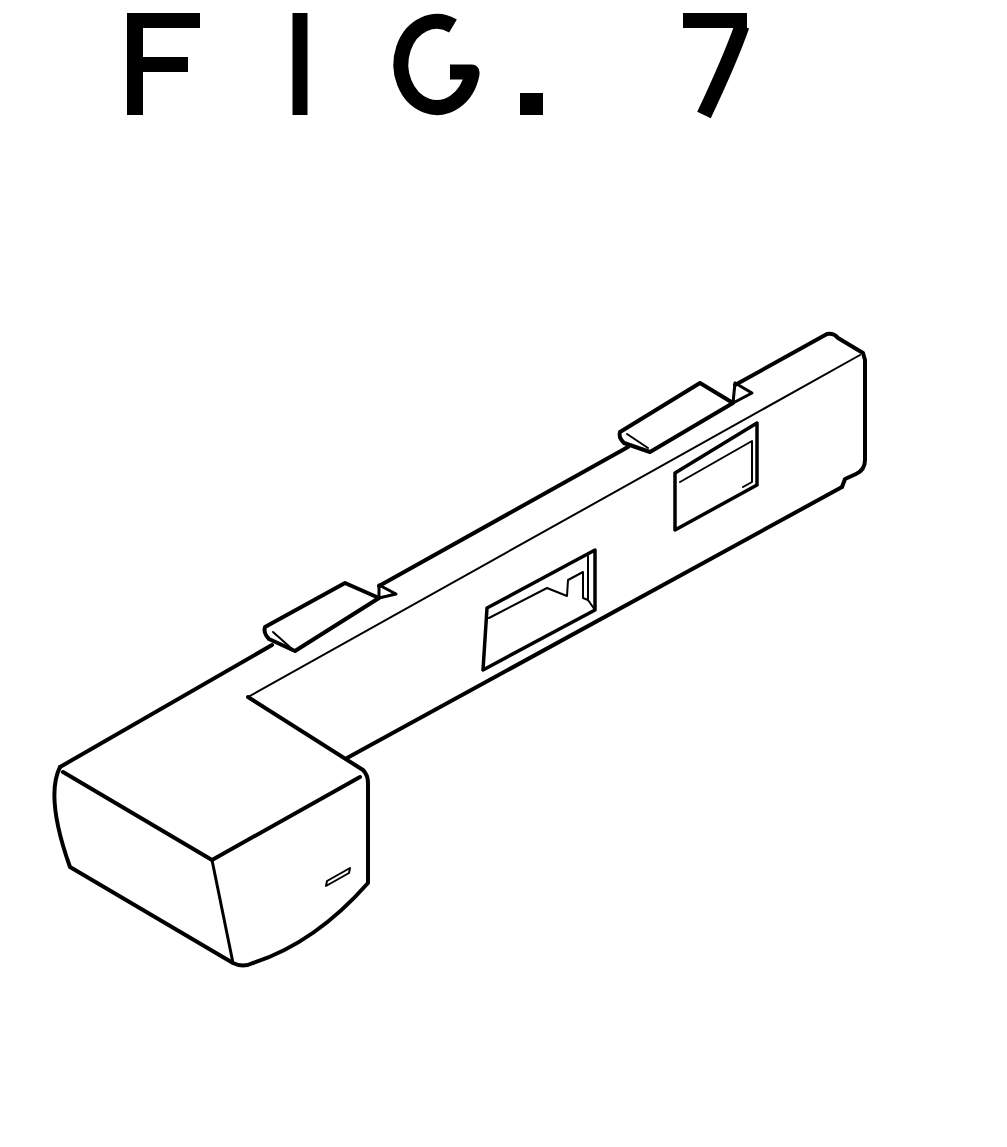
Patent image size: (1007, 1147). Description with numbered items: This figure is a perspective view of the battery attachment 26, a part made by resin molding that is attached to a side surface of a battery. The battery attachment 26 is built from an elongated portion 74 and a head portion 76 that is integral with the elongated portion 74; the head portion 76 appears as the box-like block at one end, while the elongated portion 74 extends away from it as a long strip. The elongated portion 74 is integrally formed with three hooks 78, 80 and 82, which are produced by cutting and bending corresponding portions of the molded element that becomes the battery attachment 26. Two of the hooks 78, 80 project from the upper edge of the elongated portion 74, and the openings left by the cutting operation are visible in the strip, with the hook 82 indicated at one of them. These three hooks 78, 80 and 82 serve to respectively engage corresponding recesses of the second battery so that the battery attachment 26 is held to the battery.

The battery attachment 26 is at (463, 540).
The elongated portion 74 is at (660, 557).
The head portion 76 is at (167, 802).
The hook 78 is at (292, 622).
The hook 80 is at (652, 418).
The hook 82 is at (518, 635).